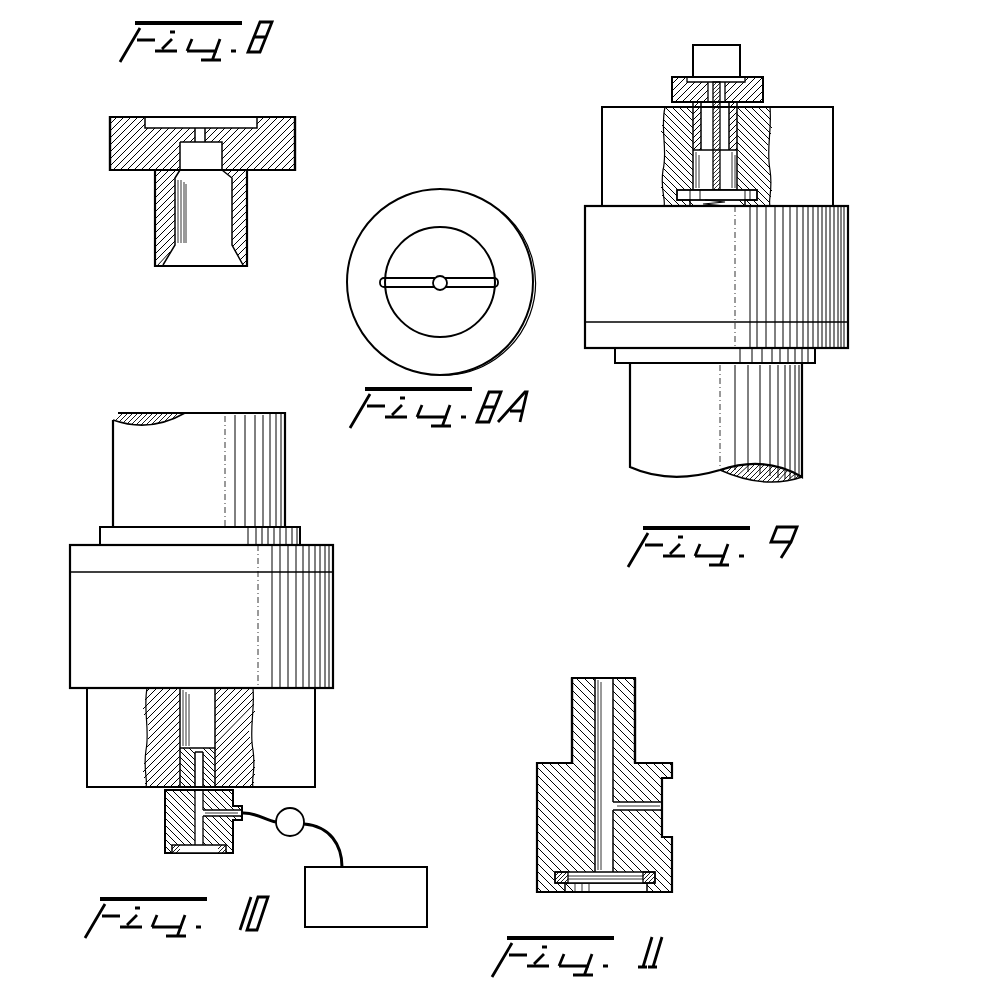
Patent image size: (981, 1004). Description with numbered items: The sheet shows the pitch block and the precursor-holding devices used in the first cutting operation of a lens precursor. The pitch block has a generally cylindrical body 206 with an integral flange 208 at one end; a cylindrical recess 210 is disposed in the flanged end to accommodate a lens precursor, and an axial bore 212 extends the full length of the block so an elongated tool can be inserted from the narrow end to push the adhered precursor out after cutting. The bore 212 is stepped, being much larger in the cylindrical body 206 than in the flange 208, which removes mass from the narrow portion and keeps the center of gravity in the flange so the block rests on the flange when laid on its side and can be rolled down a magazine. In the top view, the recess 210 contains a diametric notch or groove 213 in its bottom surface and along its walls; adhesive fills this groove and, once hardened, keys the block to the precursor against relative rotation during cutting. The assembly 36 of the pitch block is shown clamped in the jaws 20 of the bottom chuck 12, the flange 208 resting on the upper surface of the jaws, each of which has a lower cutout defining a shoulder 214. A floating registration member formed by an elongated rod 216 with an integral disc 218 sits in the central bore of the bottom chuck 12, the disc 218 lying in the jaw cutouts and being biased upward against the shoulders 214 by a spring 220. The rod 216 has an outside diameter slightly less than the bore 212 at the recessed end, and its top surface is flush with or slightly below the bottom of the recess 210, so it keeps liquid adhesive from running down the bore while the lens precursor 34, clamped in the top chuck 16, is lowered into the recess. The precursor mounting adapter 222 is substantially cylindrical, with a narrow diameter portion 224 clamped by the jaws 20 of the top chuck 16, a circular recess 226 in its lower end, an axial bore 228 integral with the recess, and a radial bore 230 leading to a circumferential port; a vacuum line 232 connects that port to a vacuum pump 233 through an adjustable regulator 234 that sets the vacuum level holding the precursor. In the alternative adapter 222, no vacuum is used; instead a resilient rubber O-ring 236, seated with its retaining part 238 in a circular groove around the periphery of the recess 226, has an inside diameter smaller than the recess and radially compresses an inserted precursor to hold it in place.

In FIG. 9, the bottom chuck 12 is at (833, 278).
In FIG. 10, the top chuck 16 is at (322, 622).
In FIG. 9, the jaws 20 is at (605, 162).
In FIG. 10, the jaws 20 is at (90, 762).
In FIG. 9, the lens precursor 34 is at (735, 55).
In FIG. 8, the plug assembly 36 is at (212, 176).
In FIG. 9, the plug assembly 36 is at (693, 100).
In FIG. 8, the cylindrical body 206 is at (245, 217).
In FIG. 9, the cylindrical body 206 is at (698, 130).
In FIG. 8, the flange 208 is at (290, 142).
In FIG. 8A, the flange 208 is at (523, 300).
In FIG. 9, the flange 208 is at (677, 92).
In FIG. 8, the cylindrical recess 210 is at (235, 122).
In FIG. 8A, the cylindrical recess 210 is at (405, 313).
In FIG. 8, the axial bore 212 is at (180, 157).
In FIG. 8A, the axial bore 212 is at (442, 277).
In FIG. 8A, the notch or groove 213 is at (413, 280).
In FIG. 9, the shoulder 214 is at (677, 208).
In FIG. 9, the elongated rod 216 is at (717, 167).
In FIG. 9, the disc 218 is at (745, 200).
In FIG. 9, the spring 220 is at (715, 208).
In FIG. 11, the spring 220 is at (608, 715).
In FIG. 10, the precursor mounting adapter 222 is at (172, 802).
In FIG. 11, the precursor mounting adapter 222 is at (670, 852).
In FIG. 10, the narrow diameter portion 224 is at (215, 767).
In FIG. 11, the narrow diameter portion 224 is at (628, 728).
In FIG. 10, the circular recess 226 is at (190, 855).
In FIG. 10, the axial bore 228 is at (213, 748).
In FIG. 10, the radial bore 230 is at (223, 808).
In FIG. 11, the radial bore 230 is at (655, 810).
In FIG. 10, the vacuum line 232 is at (265, 827).
In FIG. 10, the vacuum pump 233 is at (393, 920).
In FIG. 10, the regulator 234 is at (305, 817).
In FIG. 11, the O-ring 236 is at (615, 883).
In FIG. 11, the O-ring 238 is at (558, 877).